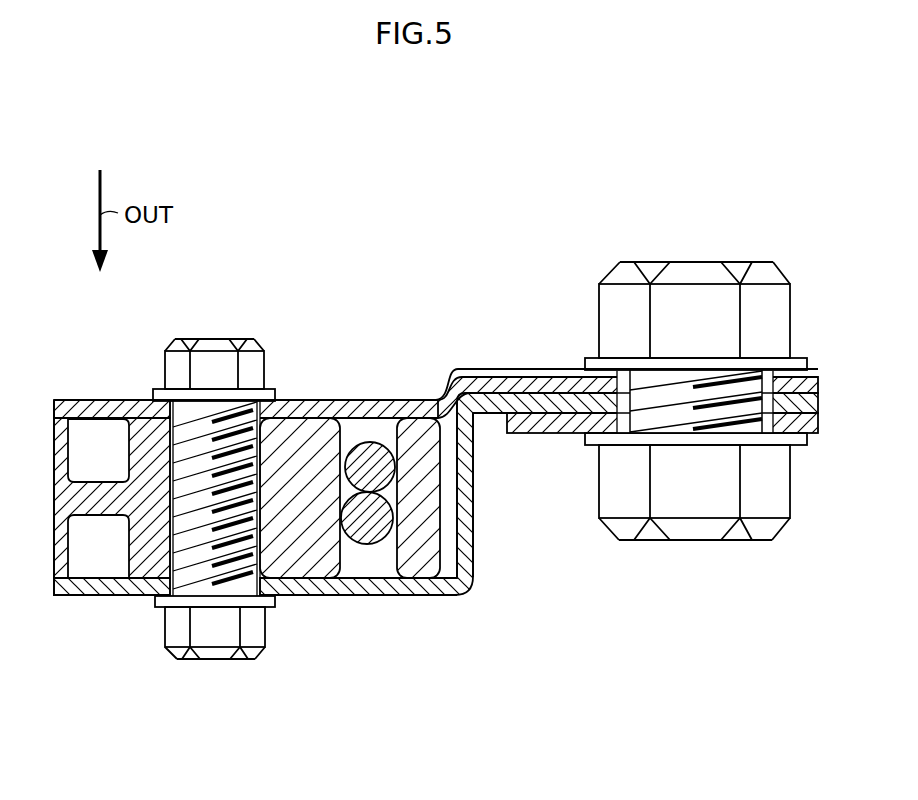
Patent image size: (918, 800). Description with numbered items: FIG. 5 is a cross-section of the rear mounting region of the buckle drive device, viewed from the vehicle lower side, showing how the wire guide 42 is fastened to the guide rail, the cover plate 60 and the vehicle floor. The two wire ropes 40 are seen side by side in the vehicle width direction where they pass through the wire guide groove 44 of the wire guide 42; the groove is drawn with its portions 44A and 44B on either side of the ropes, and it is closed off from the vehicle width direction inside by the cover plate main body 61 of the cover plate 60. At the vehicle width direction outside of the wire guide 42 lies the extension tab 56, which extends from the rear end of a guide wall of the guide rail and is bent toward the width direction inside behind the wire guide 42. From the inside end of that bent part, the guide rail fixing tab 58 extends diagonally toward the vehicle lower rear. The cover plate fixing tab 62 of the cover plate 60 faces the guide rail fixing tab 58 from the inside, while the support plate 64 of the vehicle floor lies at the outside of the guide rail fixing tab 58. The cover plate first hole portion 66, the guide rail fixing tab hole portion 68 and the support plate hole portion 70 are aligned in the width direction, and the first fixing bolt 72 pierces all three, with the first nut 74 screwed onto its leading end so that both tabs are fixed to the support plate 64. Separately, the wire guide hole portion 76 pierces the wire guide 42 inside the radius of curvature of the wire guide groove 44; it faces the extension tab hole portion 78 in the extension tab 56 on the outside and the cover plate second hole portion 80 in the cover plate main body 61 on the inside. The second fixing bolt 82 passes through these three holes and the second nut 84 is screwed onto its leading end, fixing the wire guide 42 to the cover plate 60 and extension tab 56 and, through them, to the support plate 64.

The wire rope 40 is at (347, 465).
The wire guide 42 is at (477, 571).
The wire guide groove 44 is at (356, 492).
The first holder member 44A is at (349, 435).
The second holder member 44B is at (397, 438).
The extension tab 56 is at (365, 592).
The guide rail fixing tab 58 is at (535, 408).
The cover plate 60 is at (331, 393).
The cover plate main body 61 is at (299, 400).
The cover plate fixing tab 62 is at (512, 373).
The support plate 64 is at (553, 435).
The cover plate first hole portion 66 is at (642, 387).
The guide rail fixing tab hole portion 68 is at (657, 403).
The support plate hole portion 70 is at (640, 423).
The first fixing bolt 72 is at (697, 262).
The first nut 74 is at (688, 540).
The wire guide hole portion 76 is at (238, 540).
The extension tab hole portion 78 is at (172, 582).
The cover plate second hole portion 80 is at (210, 503).
The second fixing bolt 82 is at (215, 339).
The second nut 84 is at (215, 660).